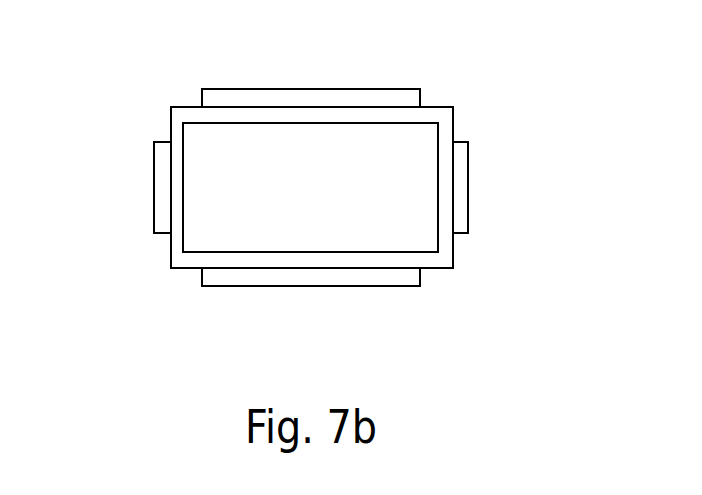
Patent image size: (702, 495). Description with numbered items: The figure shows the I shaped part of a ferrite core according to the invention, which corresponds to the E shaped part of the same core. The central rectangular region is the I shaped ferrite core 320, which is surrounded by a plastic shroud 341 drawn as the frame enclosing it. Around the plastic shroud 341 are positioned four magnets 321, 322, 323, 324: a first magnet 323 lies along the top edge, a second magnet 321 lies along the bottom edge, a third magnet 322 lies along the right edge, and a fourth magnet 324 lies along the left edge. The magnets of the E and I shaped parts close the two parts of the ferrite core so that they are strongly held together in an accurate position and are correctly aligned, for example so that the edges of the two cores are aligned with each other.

The display panel 320 is at (220, 242).
The magnet 321 is at (391, 276).
The magnet 322 is at (462, 195).
The magnet 323 is at (358, 88).
The magnet 324 is at (155, 188).
The plastic shroud 341 is at (176, 259).